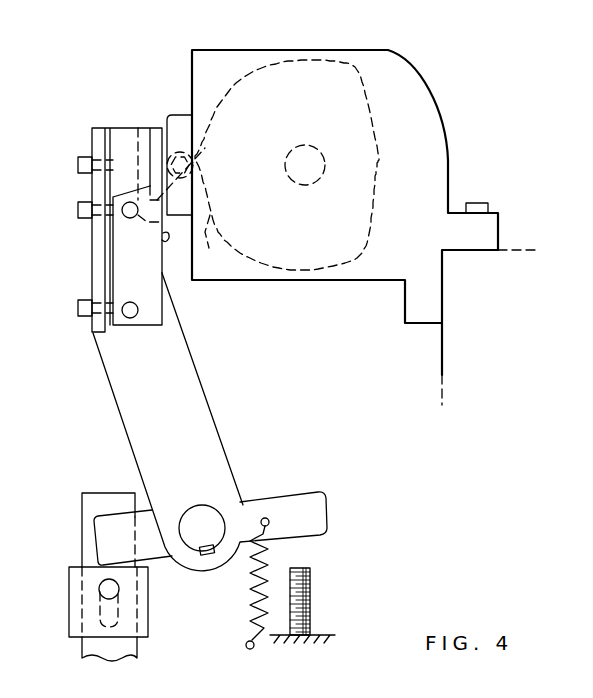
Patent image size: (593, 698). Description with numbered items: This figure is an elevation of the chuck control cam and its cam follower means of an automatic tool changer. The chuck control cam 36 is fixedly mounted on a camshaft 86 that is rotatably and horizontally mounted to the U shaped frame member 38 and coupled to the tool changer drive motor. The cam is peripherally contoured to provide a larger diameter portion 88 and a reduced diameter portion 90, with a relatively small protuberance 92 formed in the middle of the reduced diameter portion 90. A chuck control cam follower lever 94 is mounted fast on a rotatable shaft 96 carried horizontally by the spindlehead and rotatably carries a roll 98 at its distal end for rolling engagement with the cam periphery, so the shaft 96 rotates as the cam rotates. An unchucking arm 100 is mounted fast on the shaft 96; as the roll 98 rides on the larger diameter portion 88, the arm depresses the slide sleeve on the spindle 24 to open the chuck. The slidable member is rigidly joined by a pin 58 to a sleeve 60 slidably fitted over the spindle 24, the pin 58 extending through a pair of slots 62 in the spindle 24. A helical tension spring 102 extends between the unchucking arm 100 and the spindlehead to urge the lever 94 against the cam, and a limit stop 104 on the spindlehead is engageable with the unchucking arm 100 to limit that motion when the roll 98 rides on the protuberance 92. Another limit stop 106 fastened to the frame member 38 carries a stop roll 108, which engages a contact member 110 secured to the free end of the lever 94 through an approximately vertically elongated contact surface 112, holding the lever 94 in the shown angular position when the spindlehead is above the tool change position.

The spindle 24 is at (88, 651).
The chuck control cam 36 is at (256, 68).
The U shaped frame member 38 is at (445, 172).
The pin 58 is at (100, 589).
The sleeve 60 is at (72, 607).
The slots 62 is at (120, 617).
The camshaft 86 is at (305, 185).
The larger diameter portion 88 is at (216, 243).
The reduced diameter portion 90 is at (372, 216).
The protuberance 92 is at (378, 158).
The chuck control cam follower lever 94 is at (95, 254).
The rotatable shaft 96 is at (197, 510).
The roll 98 is at (200, 157).
The unchucking arm 100 is at (105, 520).
The helical tension spring 102 is at (250, 577).
The limit stop 104 is at (312, 610).
The limit stop 106 is at (178, 120).
The stop roll 108 is at (192, 153).
The contact member 110 is at (156, 306).
The contact surface 112 is at (166, 238).